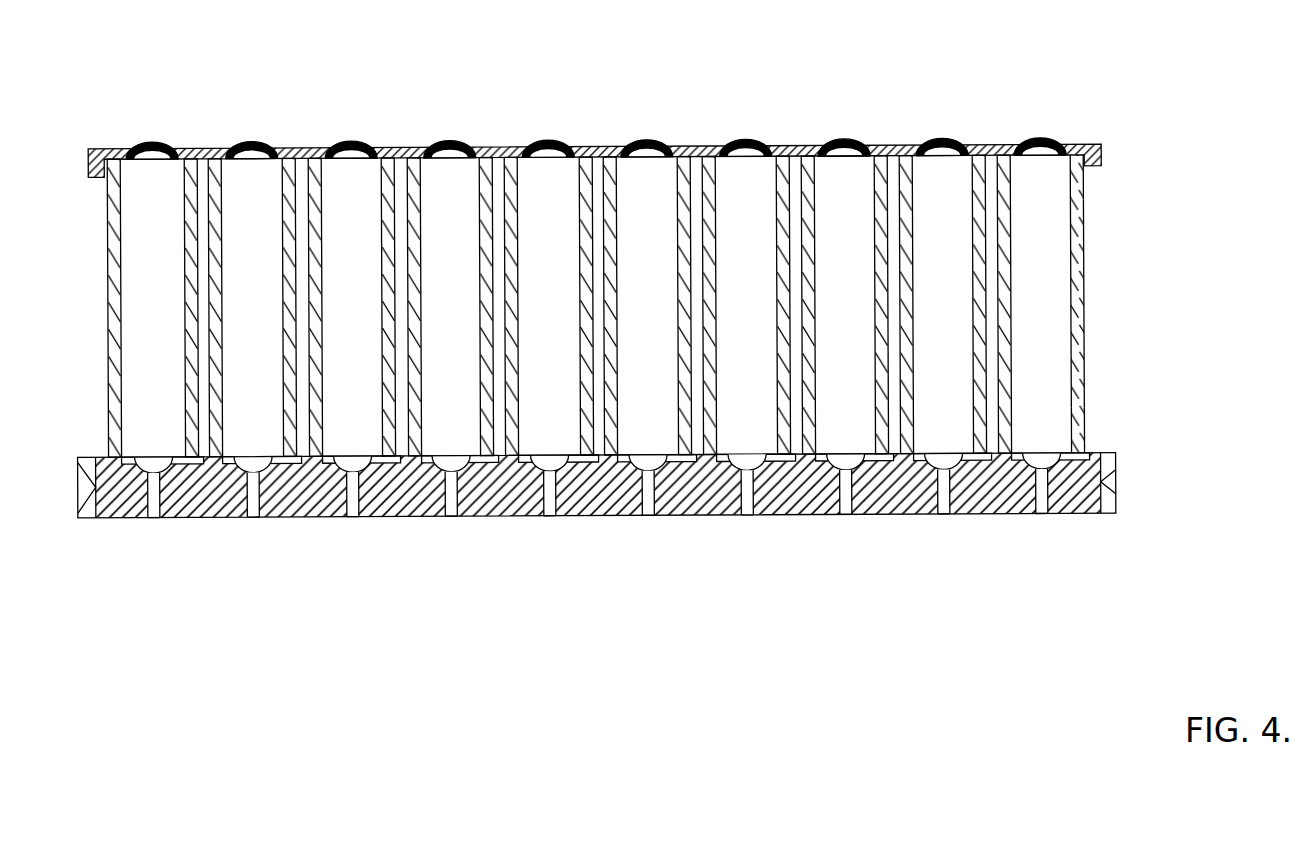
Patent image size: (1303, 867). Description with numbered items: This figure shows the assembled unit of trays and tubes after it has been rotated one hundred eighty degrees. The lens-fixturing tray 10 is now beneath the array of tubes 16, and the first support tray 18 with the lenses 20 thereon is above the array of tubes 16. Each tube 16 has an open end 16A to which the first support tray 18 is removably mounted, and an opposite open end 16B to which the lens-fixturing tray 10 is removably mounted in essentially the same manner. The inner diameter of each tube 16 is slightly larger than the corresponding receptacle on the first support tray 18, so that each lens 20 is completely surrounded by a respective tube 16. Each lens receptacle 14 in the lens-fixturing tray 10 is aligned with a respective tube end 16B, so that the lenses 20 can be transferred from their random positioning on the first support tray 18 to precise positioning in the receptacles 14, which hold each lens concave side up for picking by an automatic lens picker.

The lens-fixturing tray 10 is at (698, 502).
The lens receptacle 14 is at (739, 458).
The tube 16 is at (1087, 338).
The open end of tube 16A is at (1085, 168).
The opposite open end of tube 16B is at (1088, 448).
The first support tray 18 is at (797, 145).
The lens 20 is at (757, 160).